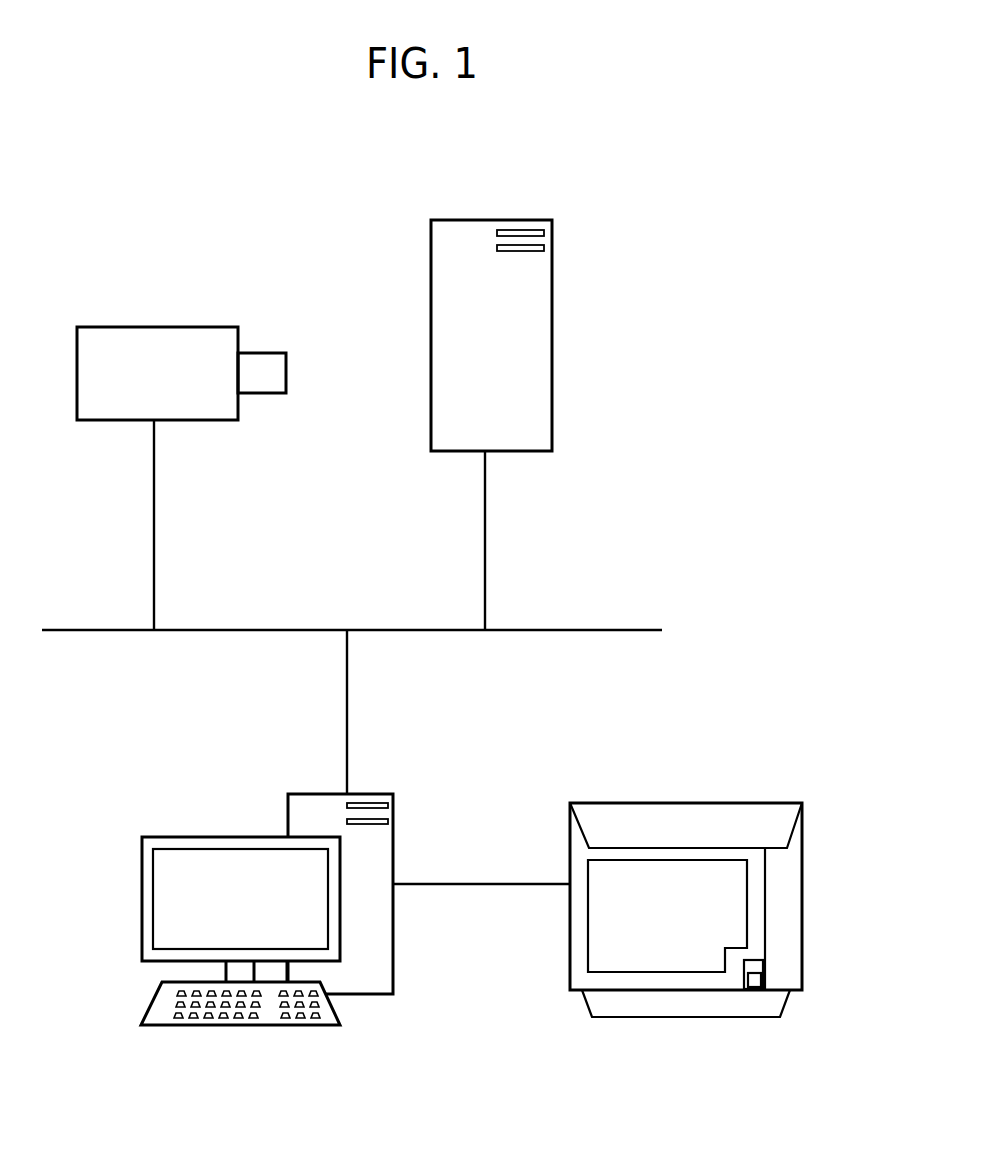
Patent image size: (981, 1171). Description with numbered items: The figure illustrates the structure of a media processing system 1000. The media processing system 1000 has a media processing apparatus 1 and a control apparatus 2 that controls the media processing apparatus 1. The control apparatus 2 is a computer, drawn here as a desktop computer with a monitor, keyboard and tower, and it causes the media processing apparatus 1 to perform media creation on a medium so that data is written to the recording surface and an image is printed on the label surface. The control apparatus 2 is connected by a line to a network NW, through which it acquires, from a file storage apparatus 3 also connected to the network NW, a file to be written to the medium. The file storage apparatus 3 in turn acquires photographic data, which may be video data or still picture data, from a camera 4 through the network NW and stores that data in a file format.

The media processing apparatus 1 is at (677, 803).
The control apparatus 2 is at (212, 837).
The file storage apparatus 3 is at (470, 220).
The camera 4 is at (149, 327).
The media processing system 1000 is at (800, 321).
The network NW is at (580, 630).